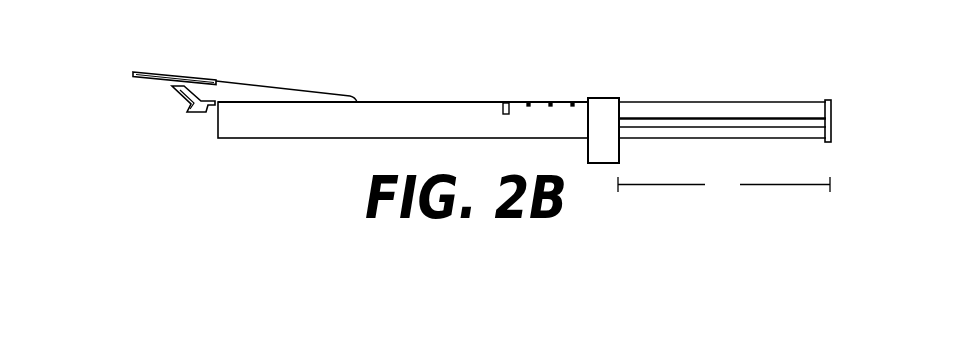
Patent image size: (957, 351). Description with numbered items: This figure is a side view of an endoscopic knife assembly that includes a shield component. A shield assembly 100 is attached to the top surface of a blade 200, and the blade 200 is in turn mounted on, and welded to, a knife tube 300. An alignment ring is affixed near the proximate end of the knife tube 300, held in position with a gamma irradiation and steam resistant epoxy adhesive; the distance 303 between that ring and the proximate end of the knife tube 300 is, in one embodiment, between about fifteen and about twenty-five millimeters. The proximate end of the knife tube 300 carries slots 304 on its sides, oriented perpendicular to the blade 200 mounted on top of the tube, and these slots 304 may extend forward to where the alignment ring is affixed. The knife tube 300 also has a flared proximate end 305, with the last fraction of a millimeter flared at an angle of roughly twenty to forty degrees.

The shield assembly 100 is at (147, 75).
The blade 200 is at (262, 94).
The knife tube 300 is at (437, 112).
The distance 303 is at (724, 185).
The slots 304 is at (806, 122).
The flared proximate end 305 is at (832, 110).